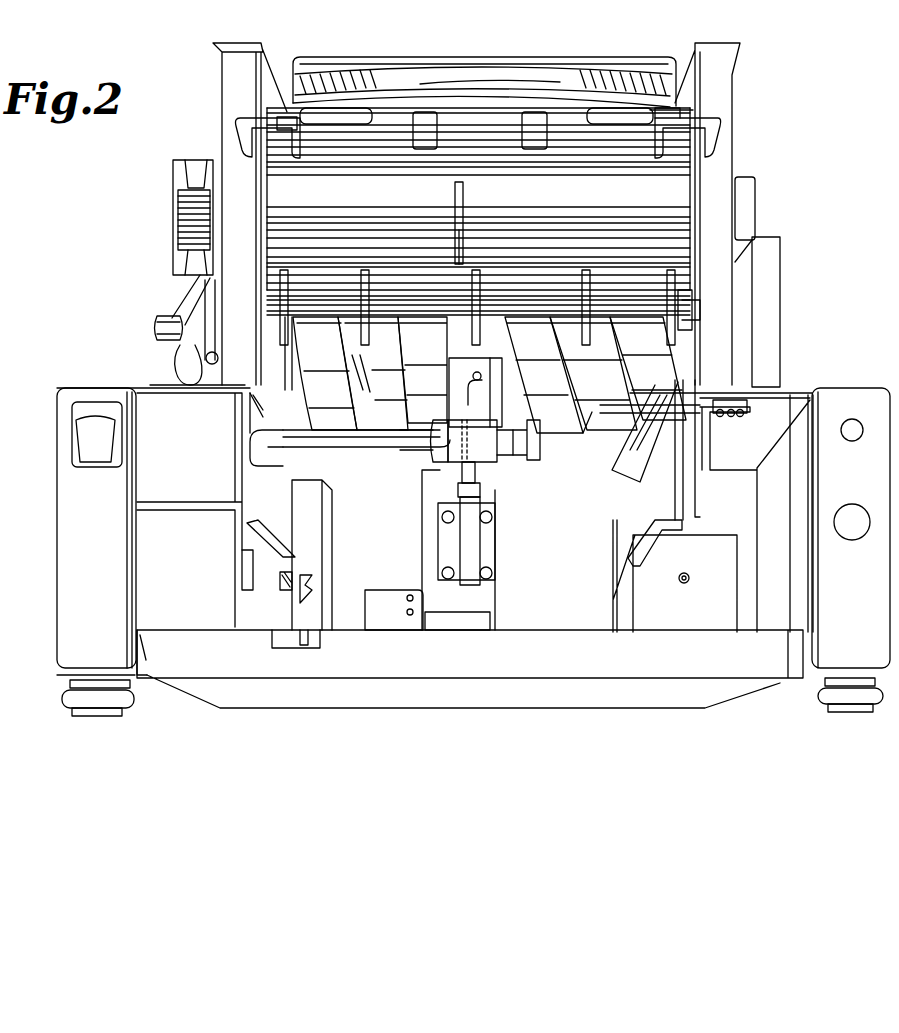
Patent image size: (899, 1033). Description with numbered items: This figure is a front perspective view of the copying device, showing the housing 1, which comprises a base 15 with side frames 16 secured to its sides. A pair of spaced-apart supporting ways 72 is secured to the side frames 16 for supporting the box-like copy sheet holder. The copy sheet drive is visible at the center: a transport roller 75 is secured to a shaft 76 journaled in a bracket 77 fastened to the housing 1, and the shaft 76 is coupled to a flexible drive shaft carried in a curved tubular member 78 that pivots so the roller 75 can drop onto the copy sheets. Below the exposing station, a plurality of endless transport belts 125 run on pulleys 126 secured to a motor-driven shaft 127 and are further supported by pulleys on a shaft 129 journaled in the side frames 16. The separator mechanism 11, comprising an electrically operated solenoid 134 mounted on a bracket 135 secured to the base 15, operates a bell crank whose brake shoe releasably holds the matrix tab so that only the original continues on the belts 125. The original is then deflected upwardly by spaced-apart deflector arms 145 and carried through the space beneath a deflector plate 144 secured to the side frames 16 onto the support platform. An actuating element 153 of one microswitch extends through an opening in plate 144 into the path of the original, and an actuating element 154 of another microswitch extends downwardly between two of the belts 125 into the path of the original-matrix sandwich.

The housing 1 is at (796, 386).
The separator mechanism 11 is at (440, 512).
The base 15 is at (588, 642).
The side frames 16 is at (228, 160).
The supporting ways 72 is at (267, 538).
The transport roller 75 is at (302, 543).
The shaft 76 is at (508, 440).
The bracket 77 is at (427, 457).
The curved tubular member 78 is at (328, 437).
The endless transport belts 125 is at (587, 366).
The pulleys 126 is at (592, 412).
The shaft 127 is at (650, 407).
The shaft 129 is at (690, 330).
The solenoid 134 is at (472, 545).
The bracket 135 is at (485, 496).
The deflector plate 144 is at (612, 200).
The deflector arms 145 is at (363, 322).
The actuating element 153 is at (460, 245).
The actuating element 154 is at (490, 364).